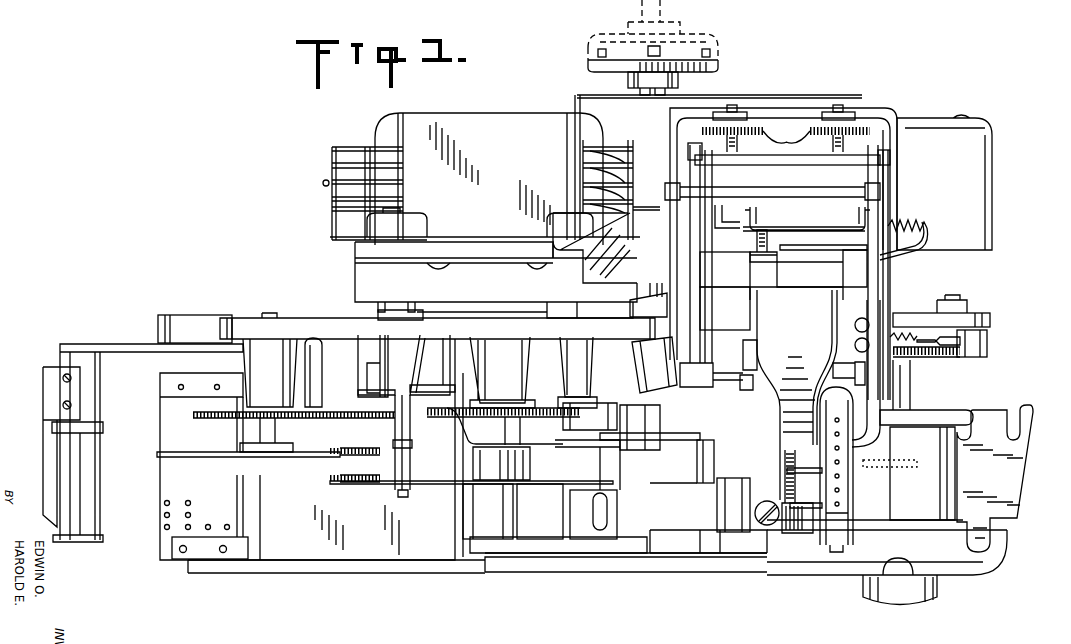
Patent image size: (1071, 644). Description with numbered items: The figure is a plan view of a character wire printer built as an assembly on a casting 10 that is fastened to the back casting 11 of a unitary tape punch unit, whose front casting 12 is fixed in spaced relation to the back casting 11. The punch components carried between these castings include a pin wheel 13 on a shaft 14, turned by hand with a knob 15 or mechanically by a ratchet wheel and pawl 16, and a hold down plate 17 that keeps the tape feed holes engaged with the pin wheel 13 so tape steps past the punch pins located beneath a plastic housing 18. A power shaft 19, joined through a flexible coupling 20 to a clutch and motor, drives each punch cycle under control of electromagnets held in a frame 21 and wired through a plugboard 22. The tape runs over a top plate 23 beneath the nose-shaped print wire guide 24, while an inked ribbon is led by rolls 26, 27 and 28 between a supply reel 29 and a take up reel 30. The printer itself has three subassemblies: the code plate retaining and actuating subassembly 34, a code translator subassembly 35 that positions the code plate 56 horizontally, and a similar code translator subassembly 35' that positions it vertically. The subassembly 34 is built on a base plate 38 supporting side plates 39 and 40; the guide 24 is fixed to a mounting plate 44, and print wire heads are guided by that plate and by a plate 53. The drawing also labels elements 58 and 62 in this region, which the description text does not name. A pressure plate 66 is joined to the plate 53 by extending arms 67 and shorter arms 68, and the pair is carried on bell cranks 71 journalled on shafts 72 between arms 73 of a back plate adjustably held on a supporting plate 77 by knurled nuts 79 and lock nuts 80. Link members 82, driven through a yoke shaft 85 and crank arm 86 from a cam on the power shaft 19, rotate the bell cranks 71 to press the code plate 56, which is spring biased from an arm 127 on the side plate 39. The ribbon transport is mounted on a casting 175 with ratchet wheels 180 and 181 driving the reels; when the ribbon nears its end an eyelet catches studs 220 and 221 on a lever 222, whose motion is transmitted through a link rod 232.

The casting 10 is at (357, 275).
The back casting 11 is at (182, 322).
The front casting 12 is at (482, 568).
The pin wheel 13 is at (893, 465).
The shaft 14 is at (900, 390).
The knob 15 is at (935, 598).
The ratchet wheel and pawl 16 is at (950, 352).
The hold down plate 17 is at (940, 485).
The plastic housing 18 is at (857, 495).
The power shaft 19 is at (663, 91).
The flexible coupling 20 is at (720, 47).
The frame 21 is at (362, 548).
The plugboard 22 is at (160, 527).
The top plate 23 is at (697, 520).
The print wire guide 24 is at (806, 330).
The roll 26 is at (416, 480).
The roll 27 is at (805, 468).
The roll 28 is at (575, 462).
The supply reel 29 is at (385, 476).
The take up reel 30 is at (482, 480).
The code plate retaining and actuating subassembly 34 is at (895, 127).
The code translator subassembly 35 is at (481, 159).
The code translator subassembly 35' is at (960, 182).
The base plate 38 is at (875, 112).
The side plate 39 is at (880, 168).
The side plate 40 is at (688, 153).
The mounting plate 44 is at (710, 283).
The plate 53 is at (795, 253).
The code plate 56 is at (738, 222).
The plate 58 is at (822, 245).
The screw 62 is at (752, 250).
The pressure plate 66 is at (790, 128).
The extending arms 67 is at (860, 215).
The arms 68 is at (807, 208).
The bell cranks 71 is at (880, 220).
The shafts 72 is at (795, 195).
The arms 73 is at (688, 167).
The supporting plate 77 is at (770, 165).
The knurled nuts 79 is at (786, 141).
The lock nuts 80 is at (745, 112).
The link members 82 is at (660, 340).
The shaft 85 is at (728, 372).
The crank arm 86 is at (745, 386).
The arm 127 is at (922, 233).
The casting 175 is at (317, 323).
The ratchet wheel 180 is at (306, 419).
The ratchet wheel 181 is at (470, 409).
The stud 220 is at (713, 468).
The stud 221 is at (697, 482).
The lever 222 is at (680, 442).
The link rod 232 is at (452, 430).